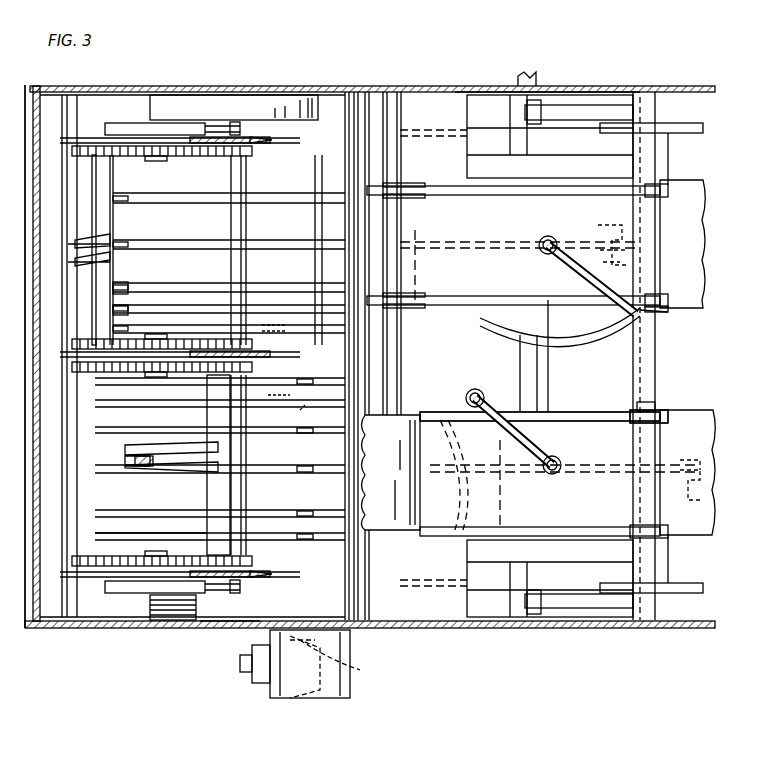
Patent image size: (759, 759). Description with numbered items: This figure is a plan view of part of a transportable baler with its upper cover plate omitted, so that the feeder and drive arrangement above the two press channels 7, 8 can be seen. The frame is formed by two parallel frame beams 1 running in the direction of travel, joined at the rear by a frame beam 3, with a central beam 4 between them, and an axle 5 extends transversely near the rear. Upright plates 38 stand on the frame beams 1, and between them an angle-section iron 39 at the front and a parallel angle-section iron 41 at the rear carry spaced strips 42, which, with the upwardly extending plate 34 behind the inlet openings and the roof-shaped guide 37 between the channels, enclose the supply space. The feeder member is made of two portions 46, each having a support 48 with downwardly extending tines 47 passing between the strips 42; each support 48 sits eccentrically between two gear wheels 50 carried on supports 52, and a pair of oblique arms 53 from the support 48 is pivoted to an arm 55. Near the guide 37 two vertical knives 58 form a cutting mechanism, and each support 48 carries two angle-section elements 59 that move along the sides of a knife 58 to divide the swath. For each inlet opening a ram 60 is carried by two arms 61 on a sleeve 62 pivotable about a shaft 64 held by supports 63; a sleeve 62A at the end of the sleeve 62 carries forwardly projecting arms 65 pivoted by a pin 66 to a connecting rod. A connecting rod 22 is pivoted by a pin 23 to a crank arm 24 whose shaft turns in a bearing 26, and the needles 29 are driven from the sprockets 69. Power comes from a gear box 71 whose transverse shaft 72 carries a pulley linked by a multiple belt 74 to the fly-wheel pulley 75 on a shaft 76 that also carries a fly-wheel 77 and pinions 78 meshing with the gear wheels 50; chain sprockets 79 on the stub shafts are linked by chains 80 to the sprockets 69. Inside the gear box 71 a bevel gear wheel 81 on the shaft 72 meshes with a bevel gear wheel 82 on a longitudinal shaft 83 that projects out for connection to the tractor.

The frame beam 1 is at (572, 152).
The frame beam 3 is at (560, 385).
The beam 4 is at (460, 362).
The axle 5 is at (538, 80).
The press channel 7 is at (680, 312).
The press channel 8 is at (582, 412).
The connecting rod 22 is at (472, 250).
The pin 23 is at (608, 260).
The arm 24 is at (617, 228).
The bearing 26 is at (670, 175).
The needle 29 is at (598, 346).
The plate 34 is at (402, 350).
The roof-shaped guide 37 is at (388, 326).
The upright plate 38 is at (455, 92).
The angle-section iron 39 is at (62, 442).
The angle-section iron 41 is at (352, 92).
The strip 42 is at (286, 265).
The portion of feeder member 46 is at (116, 217).
The tine 47 is at (128, 288).
The support 48 is at (108, 178).
The gear wheel 50 is at (75, 160).
The support 52 is at (272, 140).
The arm 53 is at (72, 252).
The arm 55 is at (138, 470).
The knife 58 is at (272, 328).
The angle-section element 59 is at (296, 405).
The ram 60 is at (402, 428).
The arm 61 is at (477, 196).
The sleeve 62 is at (662, 278).
The sleeve 62A is at (650, 100).
The support 63 is at (660, 316).
The shaft 64 is at (646, 403).
The arm 65 is at (612, 112).
The pin 66 is at (545, 98).
The driven element 69 is at (688, 128).
The gear box 71 is at (350, 686).
The shaft 72 is at (340, 655).
The multiple belt 74 is at (230, 626).
The pulley 75 is at (176, 628).
The shaft 76 is at (245, 538).
The fly-wheel 77 is at (258, 98).
The pinion 78 is at (258, 146).
The chain sprocket 79 is at (127, 124).
The chain 80 is at (496, 128).
The bevel gear wheel 81 is at (375, 673).
The bevel gear wheel 82 is at (262, 690).
The shaft 83 is at (240, 670).